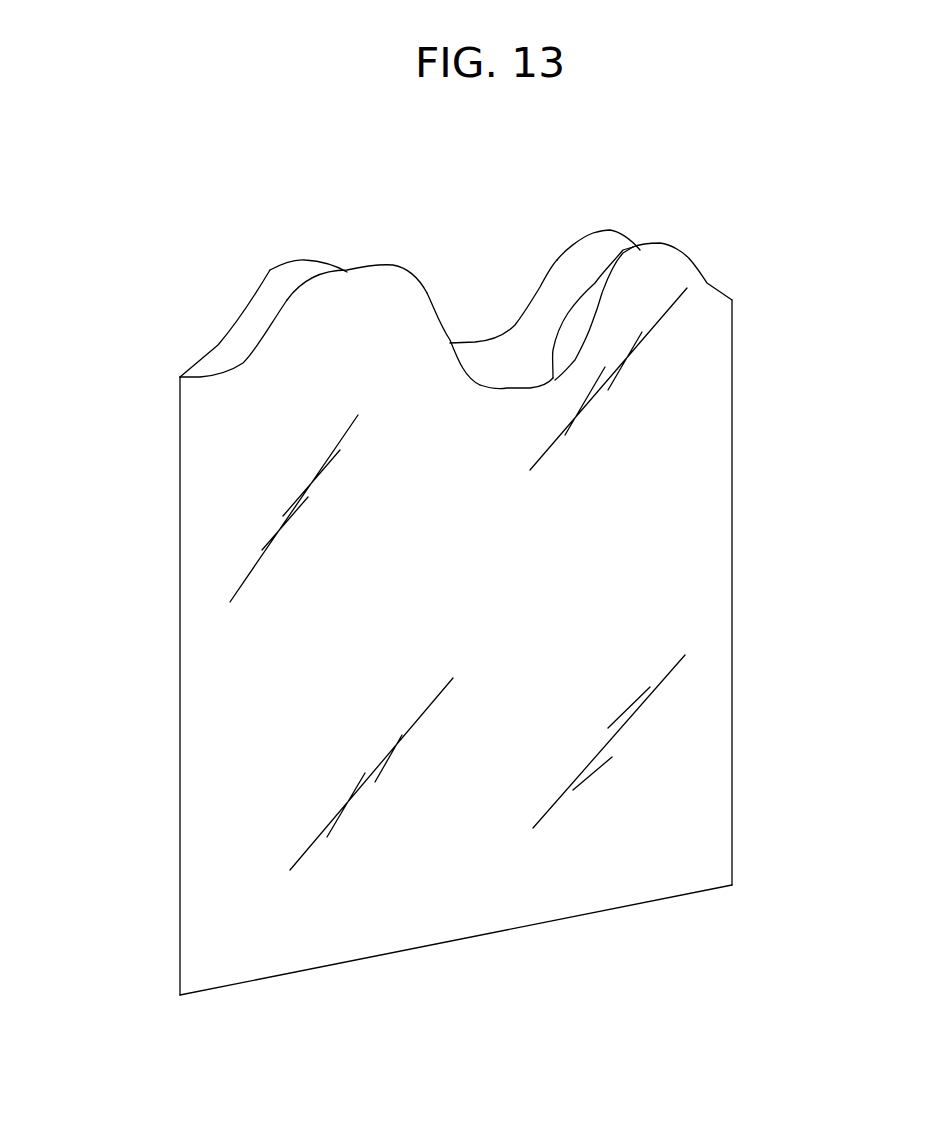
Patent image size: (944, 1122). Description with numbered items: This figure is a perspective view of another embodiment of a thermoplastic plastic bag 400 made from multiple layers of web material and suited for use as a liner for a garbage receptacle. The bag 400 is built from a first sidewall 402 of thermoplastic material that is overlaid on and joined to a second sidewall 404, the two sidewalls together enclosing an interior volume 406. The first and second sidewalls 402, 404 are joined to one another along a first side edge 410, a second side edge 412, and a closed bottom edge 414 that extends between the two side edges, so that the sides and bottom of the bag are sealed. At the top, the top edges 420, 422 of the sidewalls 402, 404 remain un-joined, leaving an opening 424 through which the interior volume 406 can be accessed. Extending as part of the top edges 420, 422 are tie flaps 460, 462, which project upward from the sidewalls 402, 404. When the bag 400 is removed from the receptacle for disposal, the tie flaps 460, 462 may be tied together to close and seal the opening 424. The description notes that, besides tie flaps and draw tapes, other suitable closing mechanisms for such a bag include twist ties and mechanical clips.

The plastic bag 400 is at (175, 158).
The first sidewall 402 is at (660, 425).
The second sidewall 404 is at (490, 363).
The interior volume 406 is at (567, 290).
The first side edge 410 is at (733, 735).
The second side edge 412 is at (181, 703).
The closed bottom edge 414 is at (450, 942).
The top edge 420 is at (612, 252).
The top edge 422 is at (472, 343).
The opening 424 is at (235, 357).
The tie flap 460 is at (370, 295).
The tie flap 462 is at (287, 287).